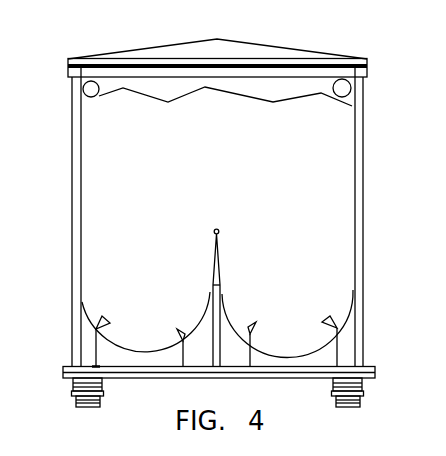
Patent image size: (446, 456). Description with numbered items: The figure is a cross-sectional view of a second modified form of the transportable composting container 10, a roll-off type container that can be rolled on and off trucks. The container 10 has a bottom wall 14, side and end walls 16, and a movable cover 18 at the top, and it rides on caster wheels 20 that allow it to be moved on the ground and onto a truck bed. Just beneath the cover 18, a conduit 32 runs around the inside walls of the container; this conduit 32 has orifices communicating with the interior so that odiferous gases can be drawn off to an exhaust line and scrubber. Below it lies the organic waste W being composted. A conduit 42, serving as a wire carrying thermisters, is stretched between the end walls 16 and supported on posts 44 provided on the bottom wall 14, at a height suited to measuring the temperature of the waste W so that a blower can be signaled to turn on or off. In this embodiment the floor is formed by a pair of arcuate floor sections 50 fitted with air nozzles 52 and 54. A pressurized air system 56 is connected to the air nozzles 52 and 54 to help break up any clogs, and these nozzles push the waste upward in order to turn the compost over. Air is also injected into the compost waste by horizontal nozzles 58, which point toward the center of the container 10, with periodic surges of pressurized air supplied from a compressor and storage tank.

The transportable composting container 10 is at (0, 93).
The bottom wall 14 is at (0, 342).
The side and end walls 16 is at (0, 222).
The movable cover 18 is at (217, 37).
The caster wheels 20 is at (0, 380).
The conduit 32 is at (94, 93).
The waste W is at (225, 107).
The conduit 42 is at (218, 230).
The posts 44 is at (213, 265).
The arcuate floor sections 50 is at (145, 353).
The air nozzles 52 is at (104, 316).
The air nozzles 54 is at (178, 330).
The pressurized air system 56 is at (95, 368).
The horizontal nozzles 58 is at (203, 327).